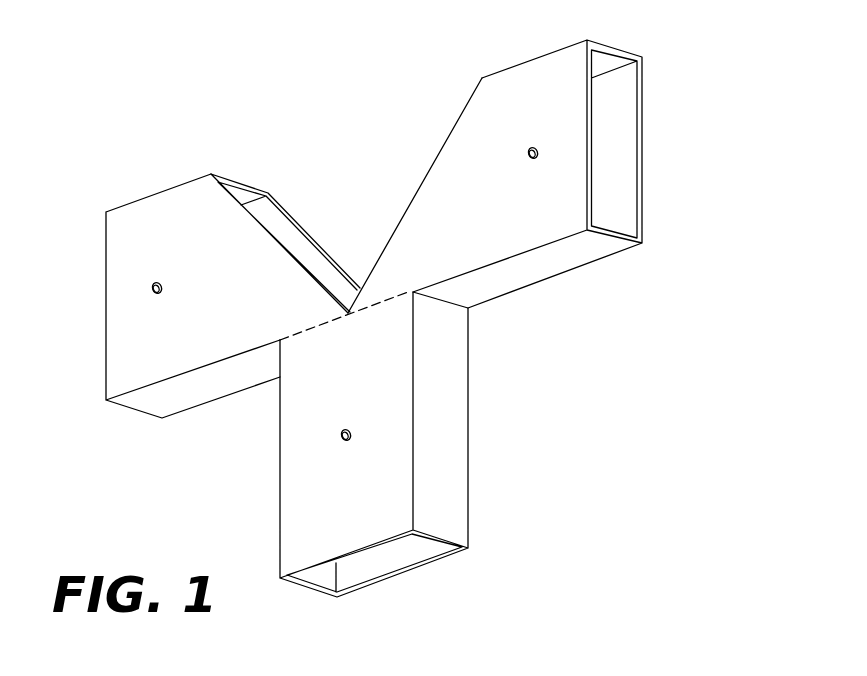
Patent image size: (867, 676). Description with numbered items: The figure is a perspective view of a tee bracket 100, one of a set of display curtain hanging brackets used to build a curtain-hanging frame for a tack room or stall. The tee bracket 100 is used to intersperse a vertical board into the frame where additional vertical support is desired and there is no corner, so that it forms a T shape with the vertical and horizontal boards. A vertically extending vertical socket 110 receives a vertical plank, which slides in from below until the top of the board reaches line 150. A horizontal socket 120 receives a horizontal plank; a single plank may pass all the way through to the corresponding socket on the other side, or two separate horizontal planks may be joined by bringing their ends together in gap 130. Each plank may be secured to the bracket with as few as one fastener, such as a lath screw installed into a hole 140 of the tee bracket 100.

The tee bracket 100 is at (376, 332).
The vertical socket 110 is at (378, 583).
The horizontal socket 120 is at (646, 142).
The gap 130 is at (400, 180).
The hole 140 is at (152, 288).
The line 150 is at (385, 302).